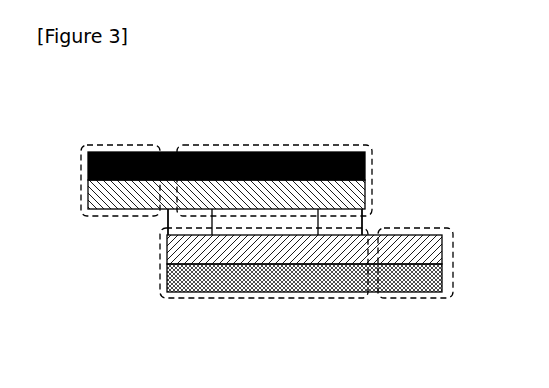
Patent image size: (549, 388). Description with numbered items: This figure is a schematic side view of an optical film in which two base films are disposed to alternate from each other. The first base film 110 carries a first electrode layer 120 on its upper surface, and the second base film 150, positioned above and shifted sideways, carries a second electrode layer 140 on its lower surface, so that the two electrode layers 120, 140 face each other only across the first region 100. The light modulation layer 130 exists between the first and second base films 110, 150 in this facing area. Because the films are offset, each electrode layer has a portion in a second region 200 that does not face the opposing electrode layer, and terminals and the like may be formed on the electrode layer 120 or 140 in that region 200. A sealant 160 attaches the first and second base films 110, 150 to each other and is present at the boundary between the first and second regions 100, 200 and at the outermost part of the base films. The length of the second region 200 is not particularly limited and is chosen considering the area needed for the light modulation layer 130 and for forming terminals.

The first region 100 is at (266, 145).
The first base film 110 is at (165, 276).
The first electrode layer 120 is at (444, 247).
The light modulation layer 130 is at (264, 214).
The second electrode layer 140 is at (367, 190).
The second base film 150 is at (86, 164).
The sealant 160 is at (188, 214).
The second region 200 is at (120, 145).